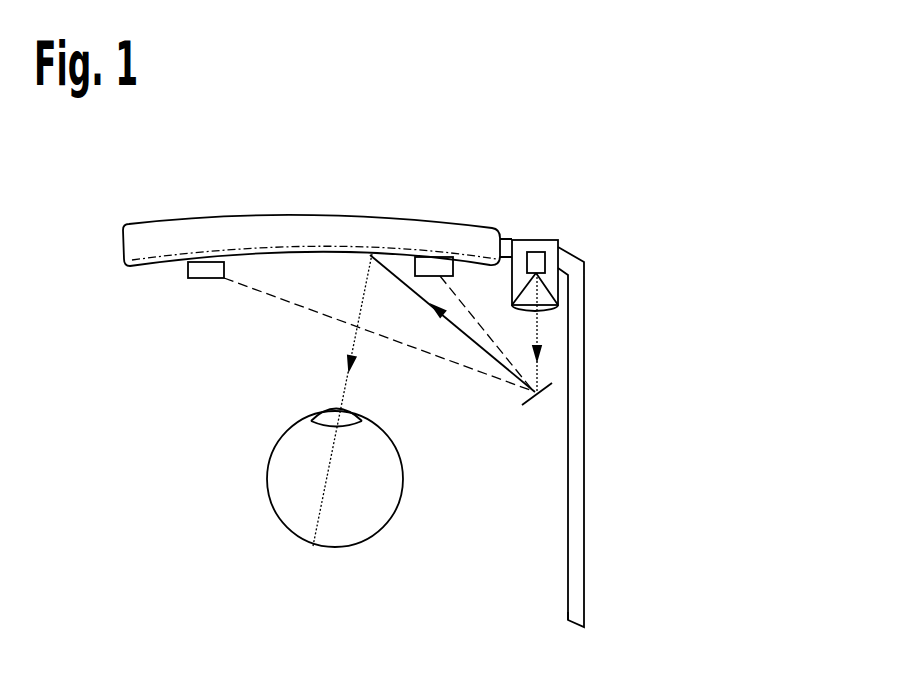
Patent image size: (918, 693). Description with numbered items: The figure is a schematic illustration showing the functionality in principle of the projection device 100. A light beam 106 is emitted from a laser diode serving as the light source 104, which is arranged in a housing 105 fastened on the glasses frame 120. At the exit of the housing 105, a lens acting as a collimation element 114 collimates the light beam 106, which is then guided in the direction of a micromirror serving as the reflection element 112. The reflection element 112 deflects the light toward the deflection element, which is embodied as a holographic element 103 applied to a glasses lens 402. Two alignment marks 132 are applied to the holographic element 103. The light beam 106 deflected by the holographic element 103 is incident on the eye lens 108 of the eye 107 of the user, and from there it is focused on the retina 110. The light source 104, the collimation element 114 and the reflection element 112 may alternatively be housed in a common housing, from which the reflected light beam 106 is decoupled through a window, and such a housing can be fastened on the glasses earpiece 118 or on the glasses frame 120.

The projection device 100 is at (700, 232).
The holographic element 103 is at (147, 277).
The light source 104 is at (545, 262).
The housing 105 is at (550, 240).
The light beam 106 is at (540, 368).
The eye 107 is at (218, 446).
The eye lens 108 is at (325, 413).
The retina 110 is at (272, 505).
The reflection element 112 is at (553, 386).
The collimation element 114 is at (560, 318).
The glasses earpiece 118 is at (575, 582).
The glasses frame 120 is at (509, 240).
The alignment marks 132 is at (433, 262).
The glasses lens 402 is at (215, 232).